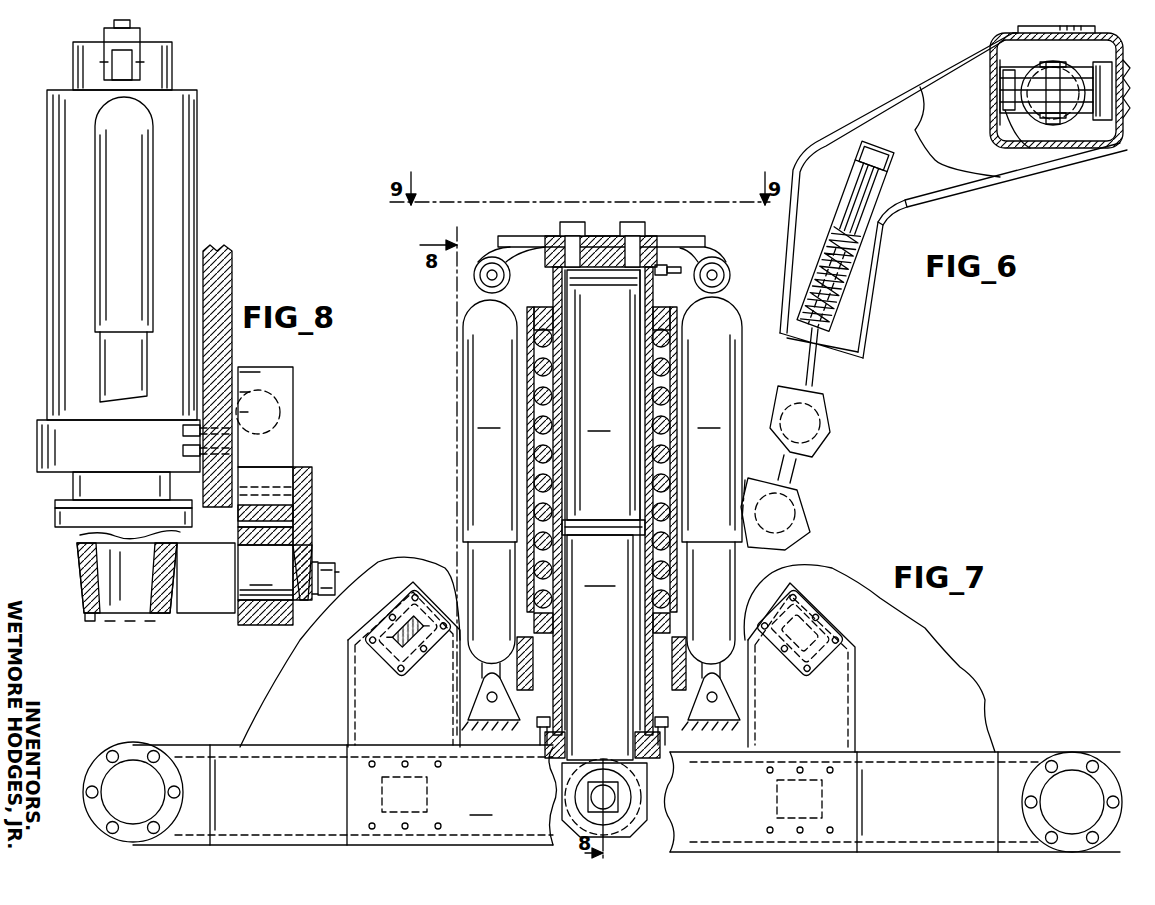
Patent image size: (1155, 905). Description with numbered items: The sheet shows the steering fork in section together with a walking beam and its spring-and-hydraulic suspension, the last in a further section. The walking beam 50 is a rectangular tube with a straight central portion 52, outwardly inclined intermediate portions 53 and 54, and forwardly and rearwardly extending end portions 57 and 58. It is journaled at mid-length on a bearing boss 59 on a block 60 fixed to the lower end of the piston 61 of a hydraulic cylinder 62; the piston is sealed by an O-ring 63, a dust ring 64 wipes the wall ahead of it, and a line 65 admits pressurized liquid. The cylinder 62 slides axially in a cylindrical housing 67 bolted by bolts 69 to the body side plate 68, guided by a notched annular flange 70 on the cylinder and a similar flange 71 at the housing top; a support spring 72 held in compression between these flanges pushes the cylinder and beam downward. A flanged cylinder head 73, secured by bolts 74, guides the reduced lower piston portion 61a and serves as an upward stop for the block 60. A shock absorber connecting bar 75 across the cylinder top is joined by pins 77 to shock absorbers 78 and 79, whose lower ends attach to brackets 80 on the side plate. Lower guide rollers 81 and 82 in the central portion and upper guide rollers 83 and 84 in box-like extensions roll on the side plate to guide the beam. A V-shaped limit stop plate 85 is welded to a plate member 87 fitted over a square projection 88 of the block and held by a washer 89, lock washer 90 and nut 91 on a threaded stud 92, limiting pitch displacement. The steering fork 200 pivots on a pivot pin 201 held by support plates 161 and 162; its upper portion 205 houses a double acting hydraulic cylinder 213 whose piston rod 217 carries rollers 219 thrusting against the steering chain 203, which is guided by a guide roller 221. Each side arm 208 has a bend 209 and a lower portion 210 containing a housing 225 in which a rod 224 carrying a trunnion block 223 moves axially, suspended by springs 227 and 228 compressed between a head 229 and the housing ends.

In FIG. 7, the walking beam 50 is at (332, 746).
In FIG. 8, the walking beam 50 is at (255, 625).
In FIG. 7, the straight central portion 52 is at (421, 795).
In FIG. 7, the outwardly inclined intermediate portion 53 is at (895, 768).
In FIG. 7, the outwardly inclined intermediate portion 54 is at (228, 745).
In FIG. 7, the end portion 57 is at (1025, 752).
In FIG. 7, the end portion 58 is at (168, 745).
In FIG. 7, the bearing boss 59 is at (616, 797).
In FIG. 8, the bearing boss 59 is at (265, 576).
In FIG. 7, the block 60 is at (648, 824).
In FIG. 8, the block 60 is at (80, 585).
In FIG. 7, the piston 61 is at (603, 395).
In FIG. 7, the lower piston portion 61a is at (600, 647).
In FIG. 8, the lower piston portion 61a is at (170, 545).
In FIG. 7, the hydraulic cylinder 62 is at (553, 272).
In FIG. 8, the hydraulic cylinder 62 is at (172, 68).
In FIG. 7, the O-ring 63 is at (653, 300).
In FIG. 7, the dust ring 64 is at (575, 520).
In FIG. 7, the line 65 is at (673, 268).
In FIG. 7, the cylindrical housing 67 is at (672, 398).
In FIG. 8, the cylindrical housing 67 is at (187, 128).
In FIG. 7, the side plate 68 is at (945, 655).
In FIG. 8, the side plate 68 is at (232, 262).
In FIG. 8, the bolts 69 is at (183, 450).
In FIG. 7, the annular flange 70 is at (662, 630).
In FIG. 7, the flange 71 is at (665, 337).
In FIG. 7, the support spring 72 is at (538, 360).
In FIG. 7, the flanged cylinder head 73 is at (665, 758).
In FIG. 8, the flanged cylinder head 73 is at (55, 517).
In FIG. 7, the bolts 74 is at (550, 758).
In FIG. 8, the bolts 74 is at (55, 503).
In FIG. 7, the shock absorber connecting bar 75 is at (520, 237).
In FIG. 8, the shock absorber connecting bar 75 is at (140, 33).
In FIG. 7, the pins 77 is at (492, 275).
In FIG. 7, the shock absorber 78 is at (491, 542).
In FIG. 8, the shock absorber 78 is at (140, 178).
In FIG. 7, the shock absorber 79 is at (712, 487).
In FIG. 7, the brackets 80 is at (470, 710).
In FIG. 7, the guide roller 81 is at (405, 760).
In FIG. 7, the guide roller 82 is at (805, 780).
In FIG. 7, the guide roller 83 is at (425, 660).
In FIG. 7, the guide roller 84 is at (808, 630).
In FIG. 8, the guide roller 84 is at (293, 403).
In FIG. 8, the limit stop plate 85 is at (300, 512).
In FIG. 8, the plate member 87 is at (312, 470).
In FIG. 7, the square projection 88 is at (592, 806).
In FIG. 8, the square projection 88 is at (303, 560).
In FIG. 8, the washer 89 is at (335, 582).
In FIG. 8, the lock washer 90 is at (314, 565).
In FIG. 8, the nut 91 is at (338, 572).
In FIG. 7, the threaded stud 92 is at (590, 792).
In FIG. 6, the pivot pin support plate 161 is at (990, 40).
In FIG. 6, the pivot pin support plate 162 is at (1120, 145).
In FIG. 6, the steering fork 200 is at (1050, 190).
In FIG. 6, the pivot pin 201 is at (1018, 32).
In FIG. 6, the steering chain 203 is at (1005, 103).
In FIG. 6, the upper portion 205 is at (1032, 148).
In FIG. 6, the side arm 208 is at (890, 250).
In FIG. 6, the bend 209 is at (820, 140).
In FIG. 6, the lower portion 210 is at (885, 320).
In FIG. 6, the double acting hydraulic cylinder 213 is at (1030, 68).
In FIG. 6, the piston rod 217 is at (1053, 125).
In FIG. 6, the roller 219 is at (1030, 148).
In FIG. 6, the guide roller 221 is at (1100, 120).
In FIG. 6, the trunnion block 223 is at (810, 470).
In FIG. 6, the rod 224 is at (820, 375).
In FIG. 6, the housing 225 is at (886, 234).
In FIG. 6, the spring 227 is at (902, 207).
In FIG. 6, the spring 228 is at (896, 301).
In FIG. 6, the head 229 is at (827, 280).